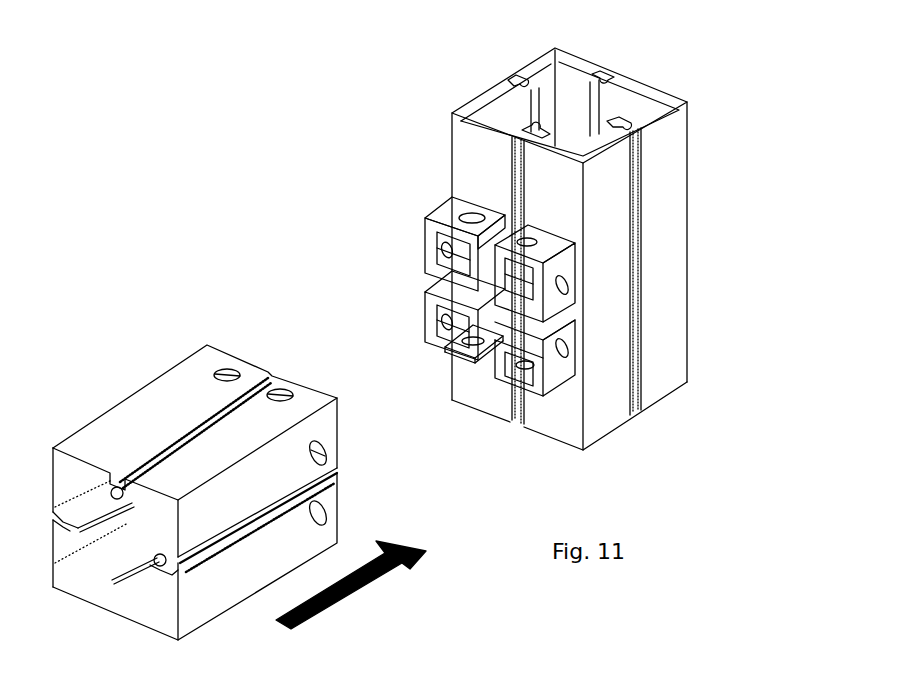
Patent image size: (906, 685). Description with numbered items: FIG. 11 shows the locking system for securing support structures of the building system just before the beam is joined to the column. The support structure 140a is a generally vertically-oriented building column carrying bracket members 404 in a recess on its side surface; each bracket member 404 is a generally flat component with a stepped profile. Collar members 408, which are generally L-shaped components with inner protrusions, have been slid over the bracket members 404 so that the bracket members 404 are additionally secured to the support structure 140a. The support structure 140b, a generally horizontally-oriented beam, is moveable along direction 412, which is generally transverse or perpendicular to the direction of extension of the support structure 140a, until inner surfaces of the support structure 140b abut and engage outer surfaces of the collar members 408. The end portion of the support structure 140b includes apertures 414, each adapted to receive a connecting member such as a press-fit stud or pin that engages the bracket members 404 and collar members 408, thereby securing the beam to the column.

The support structure 140a is at (670, 227).
The support structure 140b is at (138, 405).
The bracket member 404 is at (440, 315).
The collar member 408 is at (450, 206).
The direction 412 is at (355, 585).
The aperture 414 is at (225, 372).